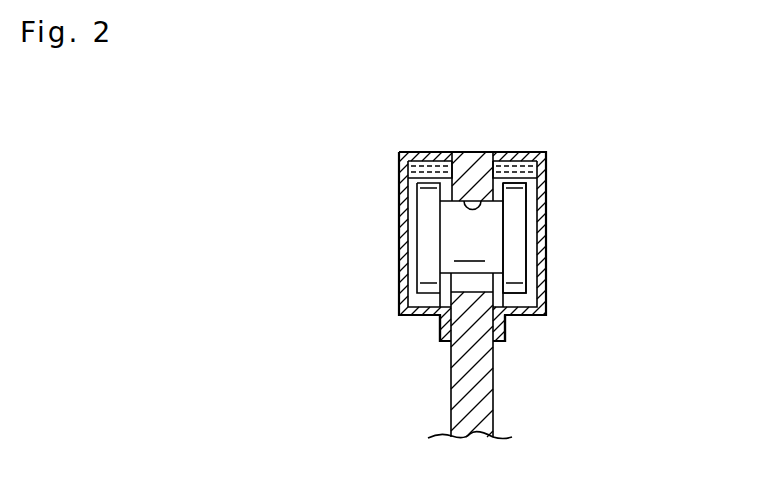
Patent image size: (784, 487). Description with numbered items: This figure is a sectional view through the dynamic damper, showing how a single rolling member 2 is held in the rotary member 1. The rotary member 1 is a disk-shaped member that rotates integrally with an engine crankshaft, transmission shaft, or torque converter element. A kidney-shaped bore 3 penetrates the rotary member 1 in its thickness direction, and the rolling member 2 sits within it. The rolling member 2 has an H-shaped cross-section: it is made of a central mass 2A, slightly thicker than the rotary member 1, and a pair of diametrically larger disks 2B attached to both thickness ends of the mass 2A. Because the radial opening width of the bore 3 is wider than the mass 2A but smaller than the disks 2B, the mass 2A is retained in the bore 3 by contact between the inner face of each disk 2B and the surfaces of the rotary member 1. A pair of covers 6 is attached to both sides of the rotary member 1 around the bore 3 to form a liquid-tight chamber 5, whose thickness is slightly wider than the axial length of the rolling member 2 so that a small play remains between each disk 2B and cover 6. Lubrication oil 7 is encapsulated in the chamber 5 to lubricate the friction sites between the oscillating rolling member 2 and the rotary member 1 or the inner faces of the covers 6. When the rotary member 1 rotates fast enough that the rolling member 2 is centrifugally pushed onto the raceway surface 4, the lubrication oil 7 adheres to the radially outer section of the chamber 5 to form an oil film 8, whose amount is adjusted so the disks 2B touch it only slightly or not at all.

The rotary member 1 is at (448, 413).
The rolling member 2 is at (530, 221).
The mass 2A is at (467, 276).
The disk 2B is at (519, 279).
The bore 3 is at (477, 293).
The raceway surface 4 is at (466, 166).
The chamber 5 is at (528, 315).
The cover 6 is at (399, 267).
The lubrication oil 7 is at (422, 162).
The oil film 8 is at (530, 162).